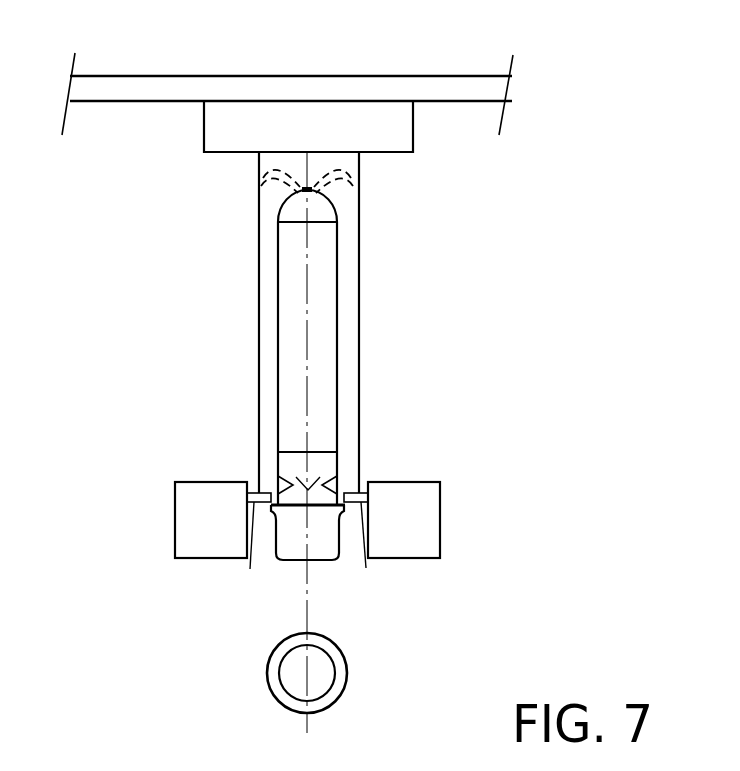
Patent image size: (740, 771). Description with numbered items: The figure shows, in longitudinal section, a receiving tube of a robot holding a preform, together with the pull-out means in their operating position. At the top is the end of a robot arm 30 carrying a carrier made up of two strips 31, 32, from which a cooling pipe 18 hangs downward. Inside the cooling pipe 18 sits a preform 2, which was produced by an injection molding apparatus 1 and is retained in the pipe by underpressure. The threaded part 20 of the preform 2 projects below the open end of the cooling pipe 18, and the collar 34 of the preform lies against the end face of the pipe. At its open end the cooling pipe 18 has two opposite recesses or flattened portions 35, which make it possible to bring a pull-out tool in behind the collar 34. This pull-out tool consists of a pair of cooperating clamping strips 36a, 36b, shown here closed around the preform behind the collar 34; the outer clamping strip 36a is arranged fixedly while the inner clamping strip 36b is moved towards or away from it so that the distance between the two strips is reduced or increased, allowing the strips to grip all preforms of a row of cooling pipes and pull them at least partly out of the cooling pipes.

The robot arm 30 is at (153, 87).
The strip 31 is at (374, 157).
The strip 32 is at (393, 135).
The injection molding apparatus 1 is at (359, 380).
The preform 2 is at (323, 281).
The cooling pipe 18 is at (352, 309).
The flattened portions 35 is at (292, 485).
The collar 34 is at (268, 522).
The clamping strip 36a is at (366, 568).
The clamping strip 36b is at (250, 569).
The threaded part 20 is at (338, 570).